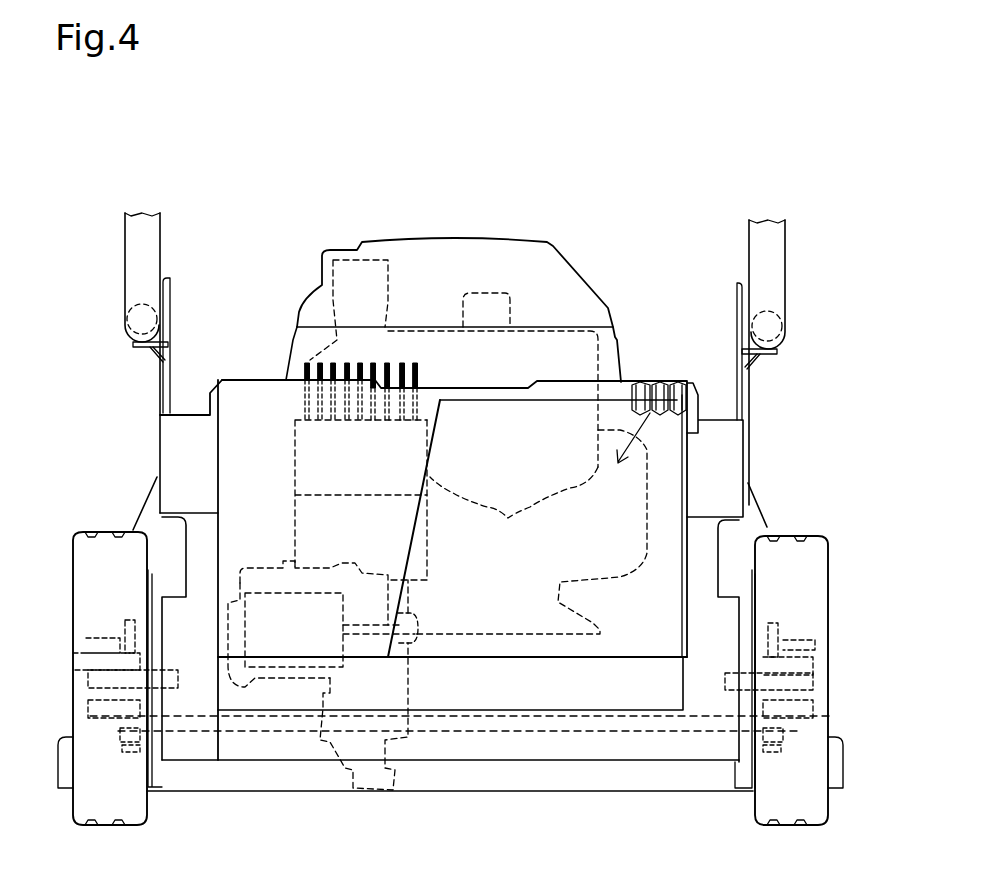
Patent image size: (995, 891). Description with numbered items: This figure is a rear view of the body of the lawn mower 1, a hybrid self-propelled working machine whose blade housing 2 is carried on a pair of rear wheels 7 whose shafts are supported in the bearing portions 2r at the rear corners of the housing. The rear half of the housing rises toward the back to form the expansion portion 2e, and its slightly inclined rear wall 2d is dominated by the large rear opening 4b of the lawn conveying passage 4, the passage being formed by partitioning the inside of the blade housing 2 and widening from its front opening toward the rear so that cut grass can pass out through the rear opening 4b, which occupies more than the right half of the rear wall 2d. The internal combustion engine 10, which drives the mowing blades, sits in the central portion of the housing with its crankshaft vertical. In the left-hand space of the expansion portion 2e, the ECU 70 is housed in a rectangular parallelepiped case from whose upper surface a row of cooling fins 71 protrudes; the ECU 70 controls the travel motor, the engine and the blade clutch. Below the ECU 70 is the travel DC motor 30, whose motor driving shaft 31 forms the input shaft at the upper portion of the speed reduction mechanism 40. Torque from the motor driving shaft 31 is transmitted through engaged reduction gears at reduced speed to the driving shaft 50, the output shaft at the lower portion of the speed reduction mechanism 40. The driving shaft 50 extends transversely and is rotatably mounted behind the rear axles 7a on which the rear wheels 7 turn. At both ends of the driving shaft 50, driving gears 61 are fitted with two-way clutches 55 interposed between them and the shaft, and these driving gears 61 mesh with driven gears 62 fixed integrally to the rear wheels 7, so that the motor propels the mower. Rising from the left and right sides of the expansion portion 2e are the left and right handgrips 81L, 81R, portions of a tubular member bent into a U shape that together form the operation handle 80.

The lawn mower 1 is at (478, 160).
The blade housing 2 is at (452, 383).
The rear wall 2d is at (250, 447).
The expansion portion 2e is at (482, 386).
The bearing portion 2r is at (165, 705).
The lawn conveying passage 4 is at (646, 382).
The rear opening 4b is at (556, 557).
The rear wheel 7 is at (107, 825).
The rear axle 7a is at (107, 667).
The internal combustion engine 10 is at (650, 502).
The travel DC motor 30 is at (262, 592).
The motor driving shaft 31 is at (367, 625).
The speed reduction mechanism 40 is at (410, 680).
The driving shaft 50 is at (483, 730).
The two-way clutch 55 is at (127, 737).
The driving gear 61 is at (130, 743).
The driven gear 62 is at (126, 620).
The ECU 70 is at (303, 368).
The cooling fins 71 is at (303, 363).
The operation handle 80 is at (455, 348).
The left handgrip 81L is at (162, 230).
The right handgrip 81R is at (748, 238).